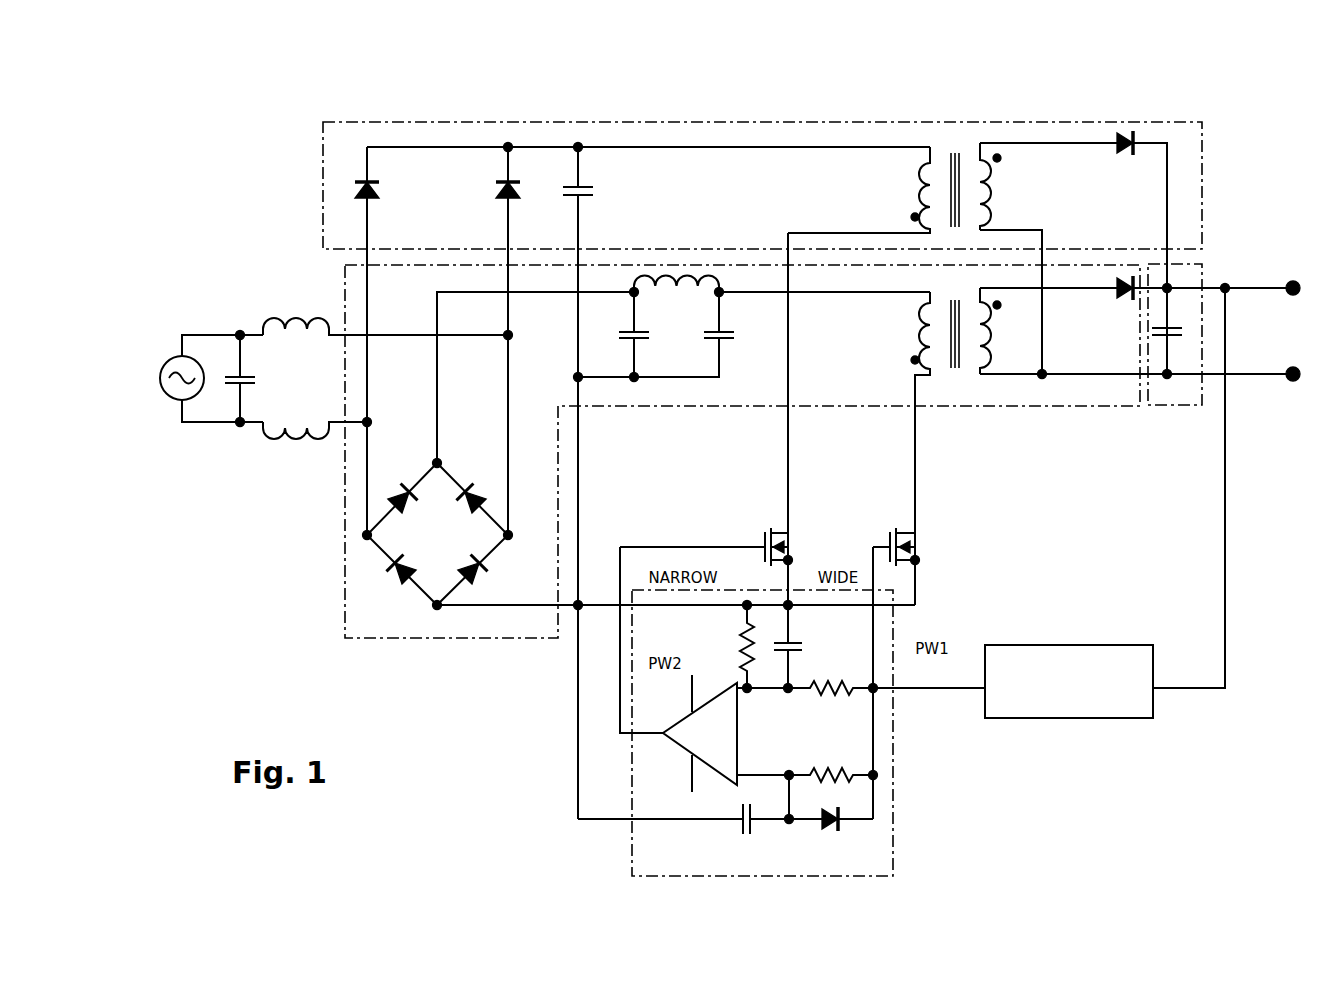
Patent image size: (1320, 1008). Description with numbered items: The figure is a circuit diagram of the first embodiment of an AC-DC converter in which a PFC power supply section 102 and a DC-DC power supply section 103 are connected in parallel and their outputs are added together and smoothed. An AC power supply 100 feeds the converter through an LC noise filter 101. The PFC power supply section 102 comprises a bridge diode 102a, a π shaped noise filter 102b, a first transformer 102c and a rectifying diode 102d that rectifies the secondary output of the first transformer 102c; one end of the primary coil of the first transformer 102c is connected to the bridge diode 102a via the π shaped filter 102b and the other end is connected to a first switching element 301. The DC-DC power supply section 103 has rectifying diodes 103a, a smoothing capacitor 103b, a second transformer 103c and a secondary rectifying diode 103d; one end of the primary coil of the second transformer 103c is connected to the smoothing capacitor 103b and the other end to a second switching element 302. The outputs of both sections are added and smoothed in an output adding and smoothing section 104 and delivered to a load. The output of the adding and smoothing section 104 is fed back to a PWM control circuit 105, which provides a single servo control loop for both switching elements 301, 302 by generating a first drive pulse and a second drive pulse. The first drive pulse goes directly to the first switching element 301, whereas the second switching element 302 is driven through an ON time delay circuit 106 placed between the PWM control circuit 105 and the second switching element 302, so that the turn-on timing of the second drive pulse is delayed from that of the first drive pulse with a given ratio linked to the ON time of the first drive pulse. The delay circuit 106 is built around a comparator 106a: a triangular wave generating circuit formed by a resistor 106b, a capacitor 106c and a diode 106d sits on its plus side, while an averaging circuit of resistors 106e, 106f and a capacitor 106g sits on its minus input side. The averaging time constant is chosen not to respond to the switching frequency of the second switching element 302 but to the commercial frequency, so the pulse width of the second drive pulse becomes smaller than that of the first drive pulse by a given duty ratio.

The AC power supply 100 is at (200, 406).
The LC noise filter 101 is at (366, 397).
The PFC power supply section 102 is at (395, 638).
The bridge diode 102a is at (639, 451).
The π shaped noise filter 102b is at (754, 328).
The first transformer 102c is at (956, 410).
The rectifying diode 102d is at (1106, 303).
The DC-DC power supply section 103 is at (760, 122).
The rectifying diodes 103a is at (437, 197).
The smoothing capacitor 103b is at (558, 262).
The second transformer 103c is at (894, 194).
The secondary rectifying diode 103d is at (1106, 157).
The output adding and smoothing section 104 is at (1167, 405).
The PWM control circuit 105 is at (1063, 718).
The ON time delay circuit 106 is at (733, 876).
The comparator 106a is at (704, 671).
The resistor 106b is at (831, 759).
The capacitor 106c is at (683, 826).
The diode 106d is at (831, 834).
The resistor 106e is at (864, 673).
The resistor 106f is at (723, 646).
The capacitor 106g is at (811, 646).
The first switching element 301 is at (924, 562).
The second switching element 302 is at (706, 419).